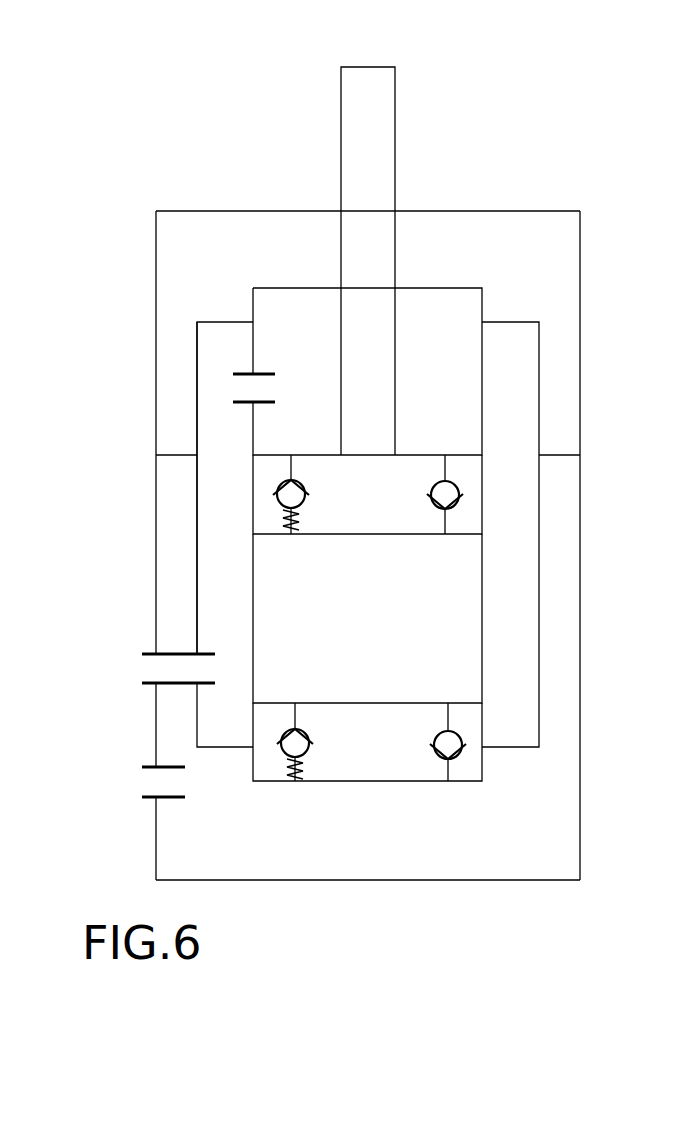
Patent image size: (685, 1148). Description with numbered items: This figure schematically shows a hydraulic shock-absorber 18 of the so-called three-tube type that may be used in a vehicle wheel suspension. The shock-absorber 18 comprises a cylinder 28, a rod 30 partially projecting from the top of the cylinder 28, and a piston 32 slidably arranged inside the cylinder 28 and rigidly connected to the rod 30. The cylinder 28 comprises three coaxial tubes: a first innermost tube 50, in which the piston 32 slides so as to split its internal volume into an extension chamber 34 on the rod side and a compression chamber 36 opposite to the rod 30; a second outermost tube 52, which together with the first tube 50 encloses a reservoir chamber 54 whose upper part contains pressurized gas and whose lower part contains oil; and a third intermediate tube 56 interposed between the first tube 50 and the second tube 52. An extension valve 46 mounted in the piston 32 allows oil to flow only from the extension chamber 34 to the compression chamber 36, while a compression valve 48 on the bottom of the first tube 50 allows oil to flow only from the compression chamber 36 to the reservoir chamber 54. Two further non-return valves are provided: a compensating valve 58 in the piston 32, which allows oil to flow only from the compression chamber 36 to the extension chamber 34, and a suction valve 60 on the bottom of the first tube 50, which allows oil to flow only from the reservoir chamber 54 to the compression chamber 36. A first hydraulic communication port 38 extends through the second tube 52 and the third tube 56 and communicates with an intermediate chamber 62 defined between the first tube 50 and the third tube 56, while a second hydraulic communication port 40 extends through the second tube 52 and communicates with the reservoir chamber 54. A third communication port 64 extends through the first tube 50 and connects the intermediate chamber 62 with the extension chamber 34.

The shock-absorber 18 is at (148, 387).
The cylinder 28 is at (582, 318).
The rod 30 is at (395, 117).
The piston 32 is at (476, 490).
The extension chamber 34 is at (443, 312).
The compression chamber 36 is at (465, 593).
The first hydraulic communication port 38 is at (146, 670).
The second hydraulic communication port 40 is at (147, 782).
The extension valve 46 is at (307, 487).
The compression valve 48 is at (282, 740).
The first innermost tube 50 is at (487, 400).
The second outermost tube 52 is at (582, 695).
The reservoir chamber 54 is at (557, 797).
The third intermediate tube 56 is at (197, 566).
The compensating valve 58 is at (466, 512).
The suction valve 60 is at (448, 759).
The intermediate chamber 62 is at (215, 515).
The third communication port 64 is at (233, 376).